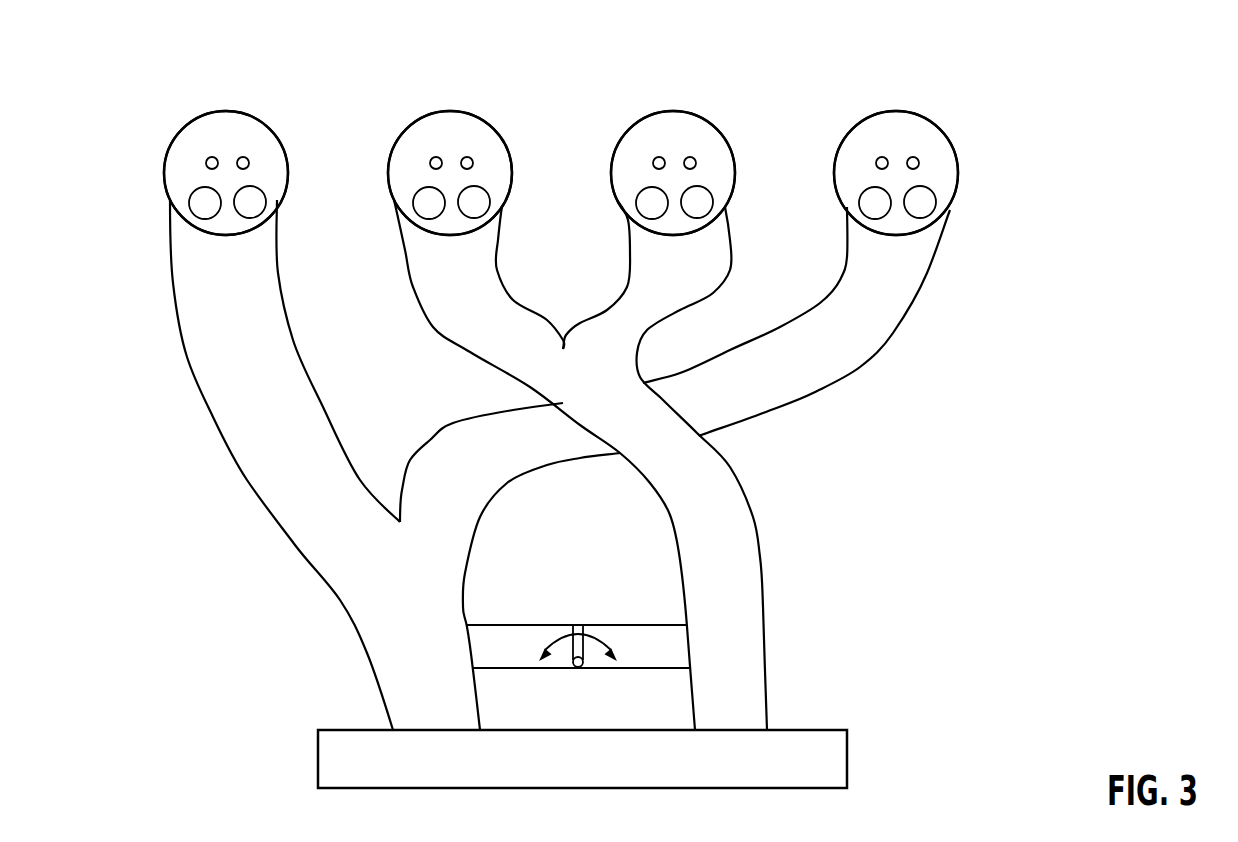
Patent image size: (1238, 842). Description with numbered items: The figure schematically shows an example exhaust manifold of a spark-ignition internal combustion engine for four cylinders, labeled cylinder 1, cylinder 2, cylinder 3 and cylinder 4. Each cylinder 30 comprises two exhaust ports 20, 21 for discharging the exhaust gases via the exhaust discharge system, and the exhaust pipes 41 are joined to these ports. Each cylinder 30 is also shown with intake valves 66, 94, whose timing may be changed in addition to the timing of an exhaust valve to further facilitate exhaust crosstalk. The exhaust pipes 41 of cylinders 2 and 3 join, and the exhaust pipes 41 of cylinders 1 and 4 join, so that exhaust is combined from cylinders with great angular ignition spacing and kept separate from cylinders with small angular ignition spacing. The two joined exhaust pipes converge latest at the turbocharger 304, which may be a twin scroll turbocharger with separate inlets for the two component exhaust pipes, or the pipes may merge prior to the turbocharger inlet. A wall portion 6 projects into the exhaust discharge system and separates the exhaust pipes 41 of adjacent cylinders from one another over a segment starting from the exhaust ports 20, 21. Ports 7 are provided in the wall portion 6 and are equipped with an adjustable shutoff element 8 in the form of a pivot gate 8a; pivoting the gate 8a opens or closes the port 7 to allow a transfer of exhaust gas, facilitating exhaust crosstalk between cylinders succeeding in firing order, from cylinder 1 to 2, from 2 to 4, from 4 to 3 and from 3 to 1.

The cylinder 1 is at (226, 139).
The cylinder 2 is at (450, 139).
The cylinder 3 is at (673, 139).
The cylinder 4 is at (896, 139).
The wall portion 6 is at (563, 576).
The port 7 is at (497, 653).
The adjustable shutoff element 8 is at (587, 650).
The pivot gate 8a is at (578, 662).
The exhaust port 20 is at (198, 188).
The exhaust port 21 is at (255, 188).
The cylinder 30 is at (220, 130).
The exhaust pipe 41 is at (190, 292).
The intake valve 66 is at (212, 157).
The intake valve 94 is at (243, 157).
The turbocharger 304 is at (848, 748).